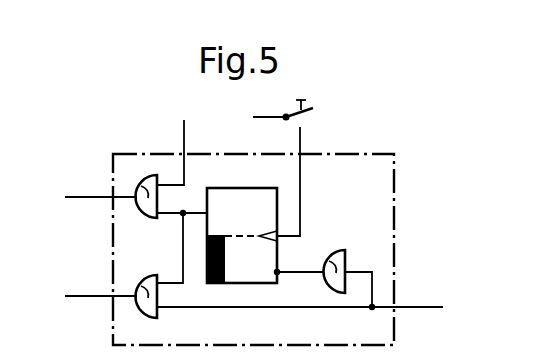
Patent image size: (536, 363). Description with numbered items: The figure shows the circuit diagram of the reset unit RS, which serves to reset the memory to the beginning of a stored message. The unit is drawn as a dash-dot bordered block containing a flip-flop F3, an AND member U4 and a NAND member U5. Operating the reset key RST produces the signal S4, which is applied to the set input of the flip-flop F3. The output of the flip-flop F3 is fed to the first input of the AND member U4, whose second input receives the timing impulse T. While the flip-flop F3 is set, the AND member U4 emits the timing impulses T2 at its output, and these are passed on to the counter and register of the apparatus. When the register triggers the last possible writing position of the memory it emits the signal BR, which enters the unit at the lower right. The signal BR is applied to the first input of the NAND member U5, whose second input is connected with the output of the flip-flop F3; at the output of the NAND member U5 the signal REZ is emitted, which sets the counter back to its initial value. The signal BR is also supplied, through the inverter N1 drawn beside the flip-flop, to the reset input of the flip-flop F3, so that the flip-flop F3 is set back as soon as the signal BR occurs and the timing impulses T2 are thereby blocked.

The reset unit RS is at (394, 191).
The timing impulse T is at (193, 113).
The timing impulses T2 is at (102, 189).
The AND member U4 is at (163, 188).
The signal REZ is at (95, 288).
The NAND member U5 is at (141, 280).
The flip-flop F3 is at (265, 235).
The signal S4 is at (307, 165).
The reset key RST is at (330, 127).
The NAND/inverter gate N1 is at (345, 262).
The signal BR is at (433, 302).